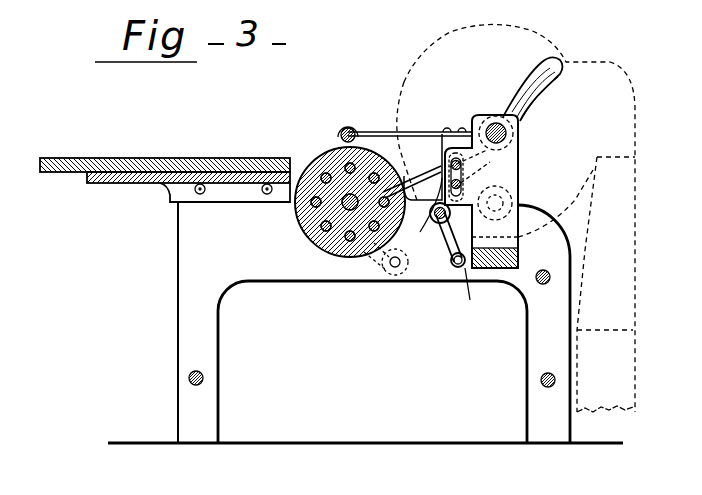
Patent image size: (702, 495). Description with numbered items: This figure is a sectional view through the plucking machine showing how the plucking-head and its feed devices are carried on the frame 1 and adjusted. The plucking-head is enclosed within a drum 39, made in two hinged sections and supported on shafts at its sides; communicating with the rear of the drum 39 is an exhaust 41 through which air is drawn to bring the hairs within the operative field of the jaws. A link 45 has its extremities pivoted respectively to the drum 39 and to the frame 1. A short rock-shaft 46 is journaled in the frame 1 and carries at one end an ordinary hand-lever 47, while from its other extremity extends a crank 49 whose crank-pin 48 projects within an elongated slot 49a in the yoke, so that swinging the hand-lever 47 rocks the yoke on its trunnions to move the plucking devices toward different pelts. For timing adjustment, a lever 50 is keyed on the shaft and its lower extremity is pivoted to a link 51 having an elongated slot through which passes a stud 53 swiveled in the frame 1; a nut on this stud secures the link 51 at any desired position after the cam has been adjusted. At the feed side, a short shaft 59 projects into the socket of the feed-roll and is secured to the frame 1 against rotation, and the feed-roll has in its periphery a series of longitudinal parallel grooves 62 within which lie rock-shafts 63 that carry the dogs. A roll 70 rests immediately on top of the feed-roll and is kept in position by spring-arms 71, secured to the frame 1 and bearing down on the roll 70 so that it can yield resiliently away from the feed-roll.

The frame 1 is at (268, 277).
The drum 39 is at (516, 218).
The exhaust 41 is at (606, 284).
The link 45 is at (473, 296).
The rock-shaft 46 is at (463, 188).
The hand-lever 47 is at (546, 102).
The crank-pin 48 is at (465, 168).
The crank 49 is at (442, 224).
The elongated slot 49a is at (455, 266).
The lever 50 is at (420, 181).
The link 51 is at (394, 268).
The stud 53 is at (401, 262).
The short shaft 59 is at (296, 168).
The longitudinal grooves 62 is at (348, 199).
The rock-shafts 63 is at (375, 173).
The roll 70 is at (352, 128).
The spring-arms 71 is at (403, 132).